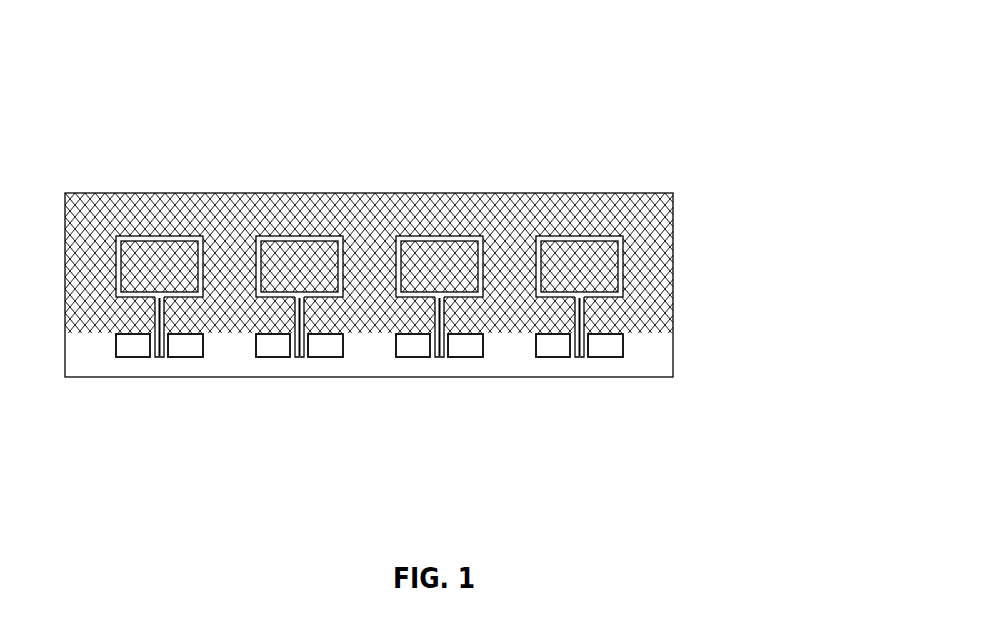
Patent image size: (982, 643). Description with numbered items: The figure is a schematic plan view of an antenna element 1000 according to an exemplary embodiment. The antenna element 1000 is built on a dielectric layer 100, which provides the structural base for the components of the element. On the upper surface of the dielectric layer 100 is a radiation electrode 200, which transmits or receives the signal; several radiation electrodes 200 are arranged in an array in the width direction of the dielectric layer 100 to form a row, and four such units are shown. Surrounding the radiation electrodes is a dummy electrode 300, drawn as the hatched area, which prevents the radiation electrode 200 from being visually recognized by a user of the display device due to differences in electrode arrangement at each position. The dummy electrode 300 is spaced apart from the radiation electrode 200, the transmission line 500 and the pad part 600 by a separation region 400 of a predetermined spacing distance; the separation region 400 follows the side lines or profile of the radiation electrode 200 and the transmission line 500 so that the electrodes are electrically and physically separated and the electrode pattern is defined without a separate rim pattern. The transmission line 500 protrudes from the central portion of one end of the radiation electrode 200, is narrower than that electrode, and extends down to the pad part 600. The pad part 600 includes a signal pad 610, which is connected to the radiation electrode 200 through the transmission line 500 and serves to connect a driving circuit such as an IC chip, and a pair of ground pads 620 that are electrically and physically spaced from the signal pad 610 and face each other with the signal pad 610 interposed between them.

The antenna element 1000 is at (689, 106).
The dielectric layer 100 is at (650, 362).
The radiation electrode 200 is at (590, 260).
The dummy electrode 300 is at (647, 267).
The separation region 400 is at (536, 226).
The transmission line 500 is at (578, 323).
The pad part 600 is at (442, 420).
The signal pad 610 is at (440, 350).
The ground pad 620 is at (557, 473).